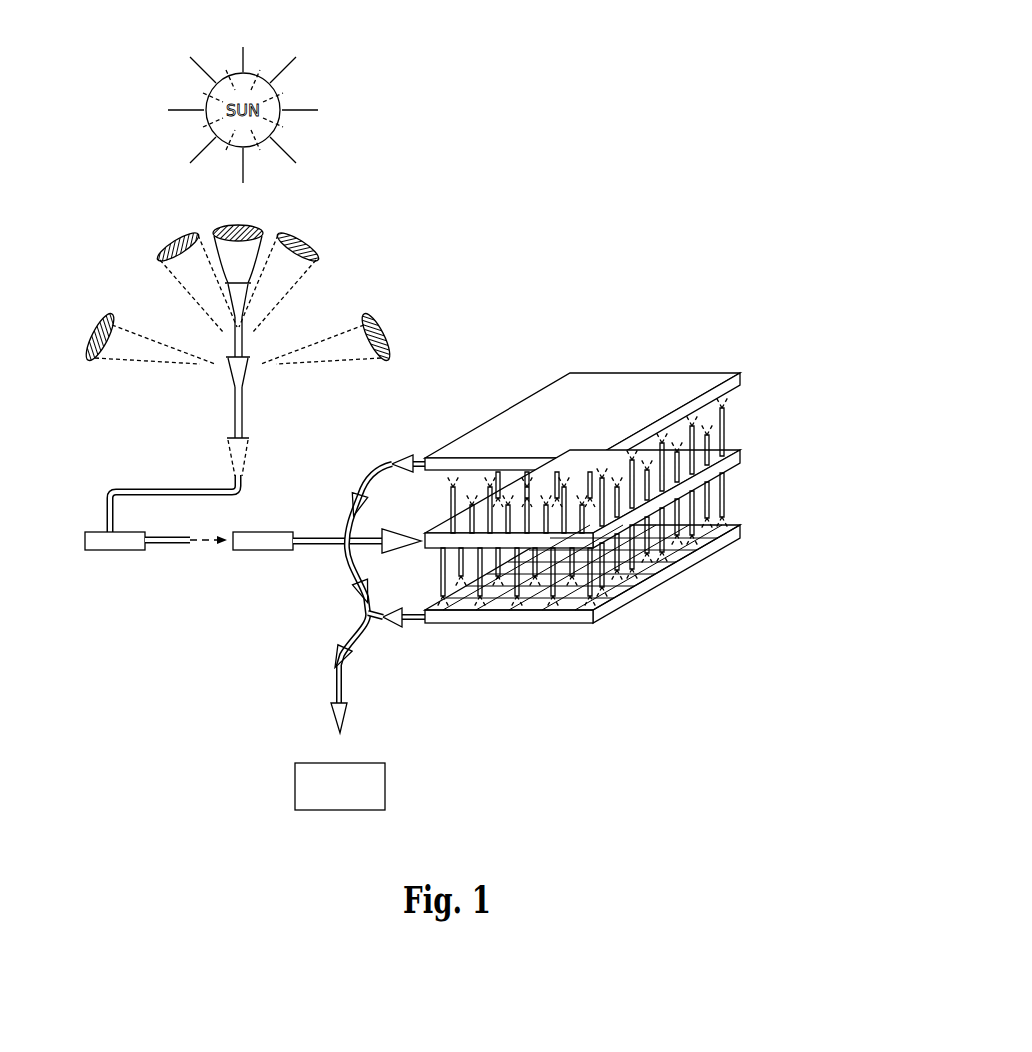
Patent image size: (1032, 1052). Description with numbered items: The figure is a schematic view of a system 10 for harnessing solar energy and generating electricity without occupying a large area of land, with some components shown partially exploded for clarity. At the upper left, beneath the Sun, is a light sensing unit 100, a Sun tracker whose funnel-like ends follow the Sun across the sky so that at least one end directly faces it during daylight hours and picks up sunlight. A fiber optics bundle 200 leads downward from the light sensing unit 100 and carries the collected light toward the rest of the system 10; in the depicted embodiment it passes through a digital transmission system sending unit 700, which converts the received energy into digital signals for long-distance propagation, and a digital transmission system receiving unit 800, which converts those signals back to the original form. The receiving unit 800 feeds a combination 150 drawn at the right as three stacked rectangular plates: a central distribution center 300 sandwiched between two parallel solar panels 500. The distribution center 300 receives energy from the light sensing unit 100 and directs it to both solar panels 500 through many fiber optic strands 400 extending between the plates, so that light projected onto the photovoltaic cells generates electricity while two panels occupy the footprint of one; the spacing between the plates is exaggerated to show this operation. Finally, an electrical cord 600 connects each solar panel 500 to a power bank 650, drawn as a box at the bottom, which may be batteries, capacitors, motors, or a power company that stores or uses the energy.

The system 10 is at (549, 152).
The light sensing unit 100 is at (253, 213).
The combination 150 is at (776, 482).
The fiber optics bundle 200 is at (235, 419).
The distribution center 300 is at (744, 452).
The fiber optic strands 400 is at (740, 410).
The solar panels 500 is at (720, 373).
The electrical cord 600 is at (333, 694).
The power bank 650 is at (385, 783).
The digital transmission system sending unit 700 is at (112, 554).
The digital transmission system receiving unit 800 is at (262, 554).